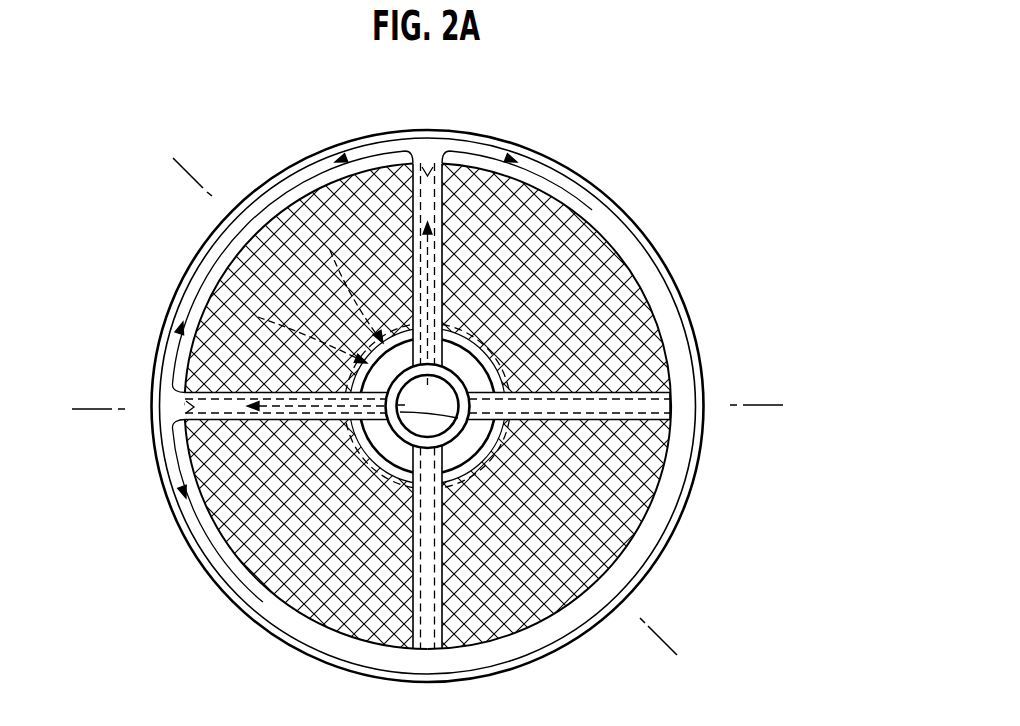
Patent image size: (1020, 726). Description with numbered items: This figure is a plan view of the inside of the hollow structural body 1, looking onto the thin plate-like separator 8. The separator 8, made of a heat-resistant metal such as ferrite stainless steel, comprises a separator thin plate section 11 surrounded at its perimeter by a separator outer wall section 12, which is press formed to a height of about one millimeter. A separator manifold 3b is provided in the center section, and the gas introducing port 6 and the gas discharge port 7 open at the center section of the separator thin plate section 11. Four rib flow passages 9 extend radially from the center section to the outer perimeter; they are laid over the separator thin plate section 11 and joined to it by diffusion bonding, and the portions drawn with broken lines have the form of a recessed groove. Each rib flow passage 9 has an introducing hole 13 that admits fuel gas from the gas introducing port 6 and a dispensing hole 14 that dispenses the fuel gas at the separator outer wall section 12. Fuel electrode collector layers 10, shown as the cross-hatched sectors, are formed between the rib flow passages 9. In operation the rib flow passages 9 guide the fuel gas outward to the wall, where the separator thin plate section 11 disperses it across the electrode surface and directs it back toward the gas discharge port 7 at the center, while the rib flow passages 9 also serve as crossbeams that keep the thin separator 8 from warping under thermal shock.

The hollow structural body 1 is at (577, 134).
The separator manifold 3b is at (495, 323).
The gas introducing port 6 is at (410, 422).
The gas discharge port 7 is at (398, 453).
The separator 8 is at (705, 336).
The rib flow passages 9 is at (617, 407).
The fuel electrode collector layers 10 is at (568, 248).
The separator thin plate section 11 is at (302, 613).
The separator outer wall section 12 is at (585, 637).
The introducing hole 13 is at (615, 550).
The dispensing hole 14 is at (670, 405).